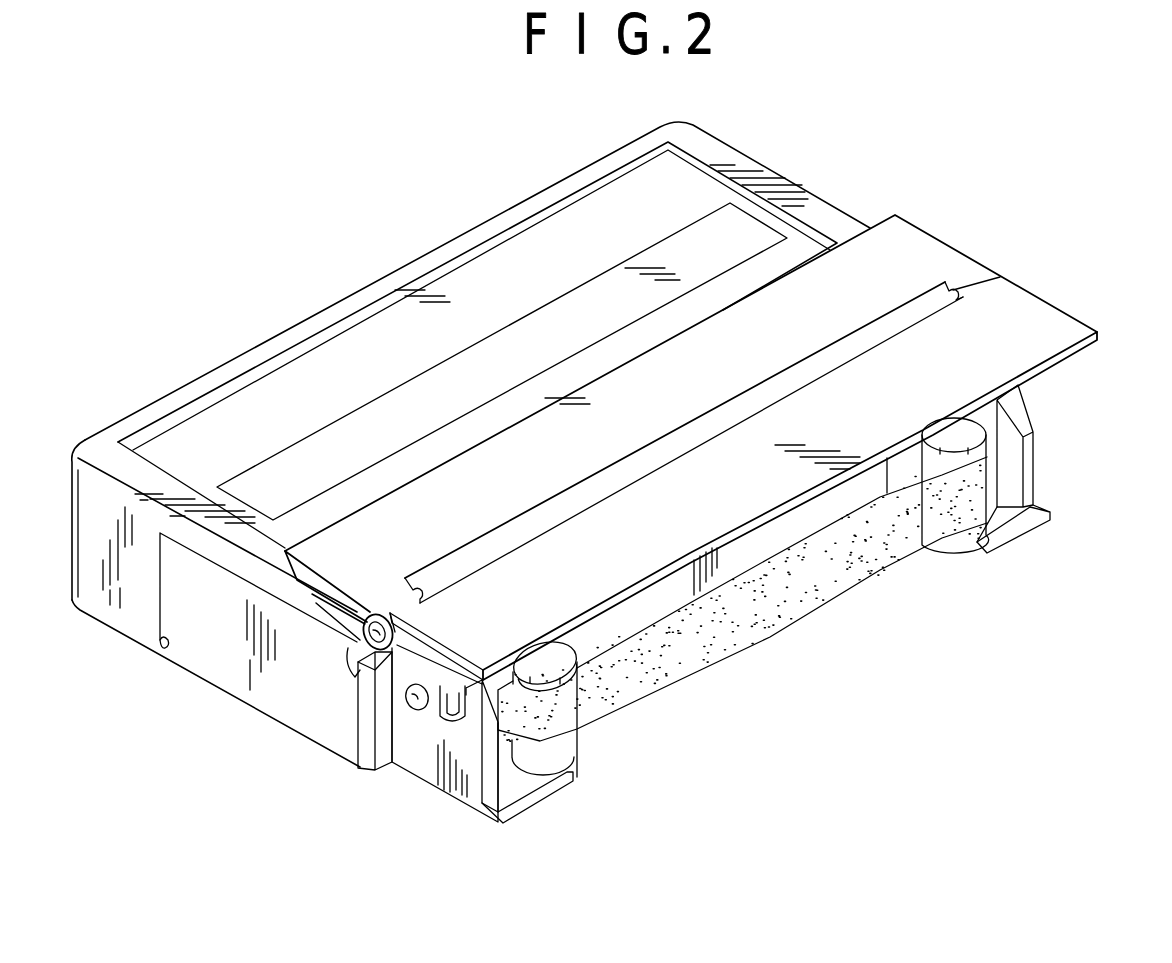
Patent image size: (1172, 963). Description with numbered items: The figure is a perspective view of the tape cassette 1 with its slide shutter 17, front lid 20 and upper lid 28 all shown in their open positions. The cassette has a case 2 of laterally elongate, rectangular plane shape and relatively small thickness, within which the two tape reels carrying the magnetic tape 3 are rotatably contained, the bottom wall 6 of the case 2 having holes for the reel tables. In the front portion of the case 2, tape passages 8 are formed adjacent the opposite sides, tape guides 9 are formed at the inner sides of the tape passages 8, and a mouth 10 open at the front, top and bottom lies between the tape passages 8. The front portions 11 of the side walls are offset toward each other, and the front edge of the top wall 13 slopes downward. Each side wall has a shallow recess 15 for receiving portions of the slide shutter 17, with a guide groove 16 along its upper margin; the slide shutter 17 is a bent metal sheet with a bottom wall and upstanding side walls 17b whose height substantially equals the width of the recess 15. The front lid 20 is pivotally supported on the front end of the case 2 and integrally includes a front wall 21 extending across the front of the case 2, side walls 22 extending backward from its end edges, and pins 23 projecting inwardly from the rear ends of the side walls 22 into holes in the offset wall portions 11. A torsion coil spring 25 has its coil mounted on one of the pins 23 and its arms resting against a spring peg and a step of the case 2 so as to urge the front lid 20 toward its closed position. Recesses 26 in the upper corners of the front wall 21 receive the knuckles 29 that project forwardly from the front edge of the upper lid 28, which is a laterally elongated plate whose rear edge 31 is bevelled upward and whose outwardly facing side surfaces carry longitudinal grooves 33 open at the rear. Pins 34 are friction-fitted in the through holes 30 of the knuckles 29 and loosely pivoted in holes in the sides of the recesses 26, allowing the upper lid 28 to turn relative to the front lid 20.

The tape cassette 1 is at (900, 168).
The case 2 is at (752, 170).
The magnetic tape 3 is at (847, 593).
The bottom wall 6 is at (1036, 505).
The tape passages 8 is at (518, 787).
The tape guides 9 is at (582, 760).
The mouth 10 is at (738, 562).
The front portions of side walls 11 is at (400, 750).
The top wall 13 is at (595, 218).
The recess 15 is at (167, 650).
The guide groove 16 is at (353, 663).
The slide shutter 17 is at (220, 678).
The side walls of slide shutter 17b is at (273, 700).
The front lid 20 is at (672, 425).
The front wall 21 is at (1030, 303).
The side walls 22 is at (440, 698).
The pins 23 is at (425, 690).
The torsion coil spring 25 is at (355, 735).
The recesses 26 is at (953, 290).
The upper lid 28 is at (928, 235).
The knuckles 29 is at (392, 600).
The through holes 30 is at (373, 614).
The rear edge 31 is at (275, 585).
The longitudinal grooves 33 is at (340, 612).
The pins 34 is at (393, 617).